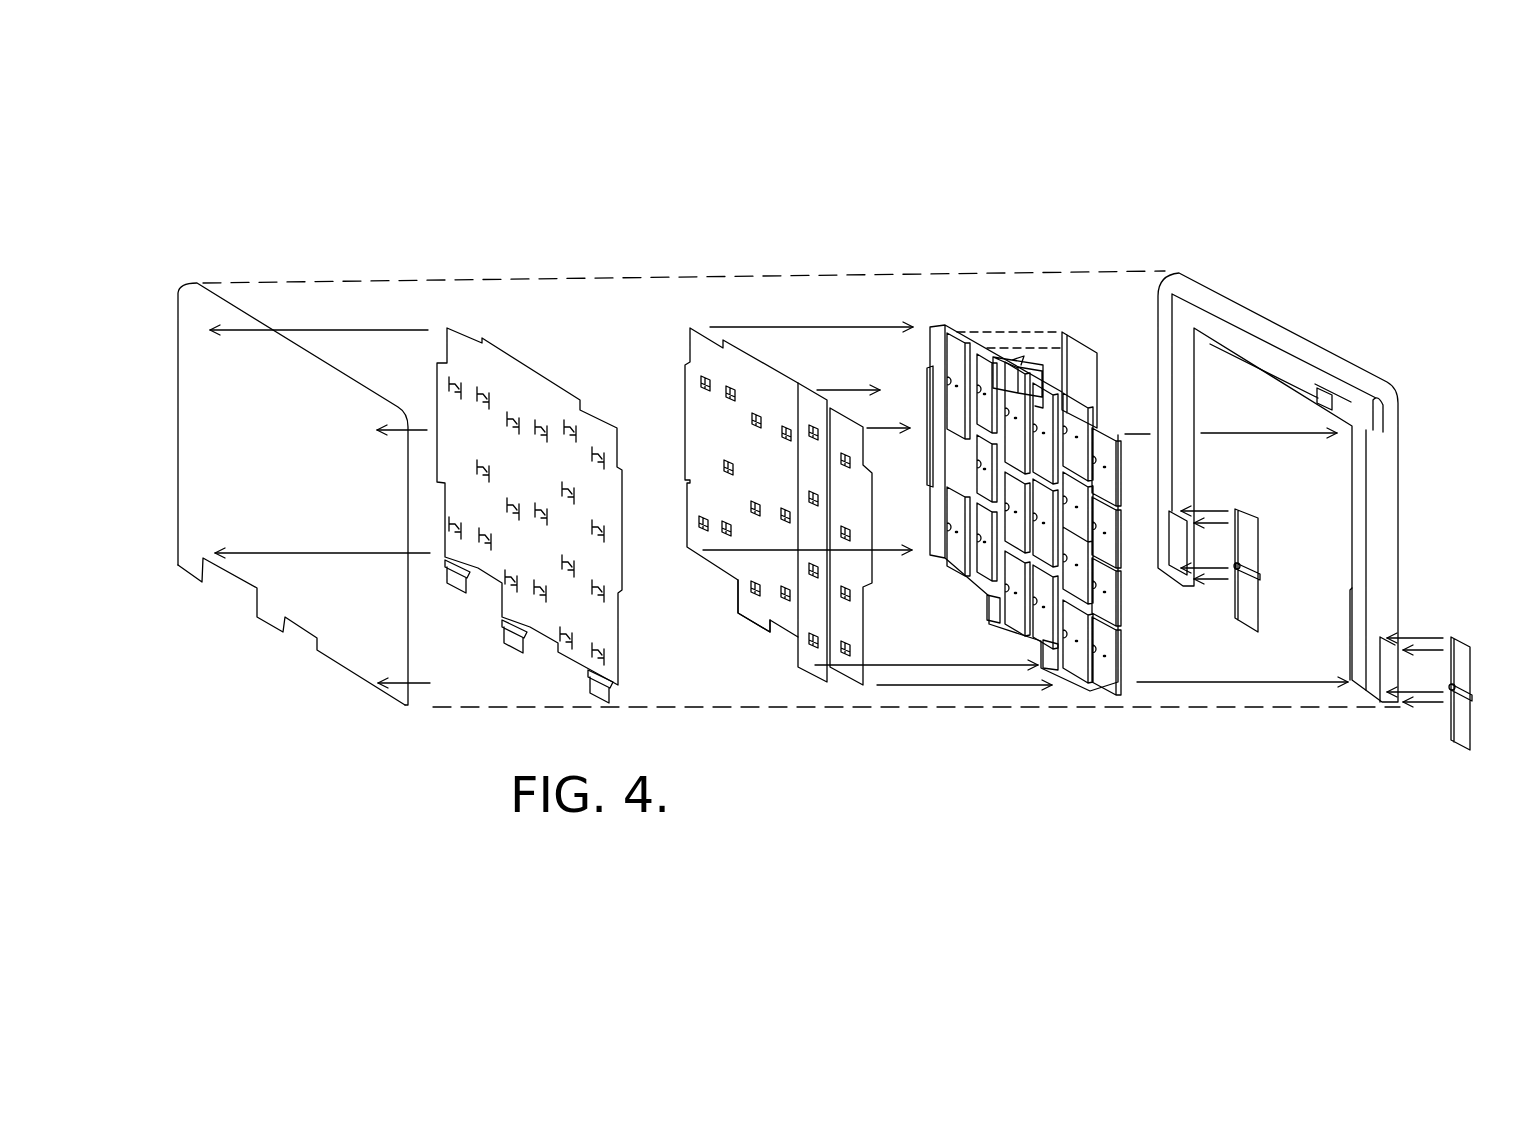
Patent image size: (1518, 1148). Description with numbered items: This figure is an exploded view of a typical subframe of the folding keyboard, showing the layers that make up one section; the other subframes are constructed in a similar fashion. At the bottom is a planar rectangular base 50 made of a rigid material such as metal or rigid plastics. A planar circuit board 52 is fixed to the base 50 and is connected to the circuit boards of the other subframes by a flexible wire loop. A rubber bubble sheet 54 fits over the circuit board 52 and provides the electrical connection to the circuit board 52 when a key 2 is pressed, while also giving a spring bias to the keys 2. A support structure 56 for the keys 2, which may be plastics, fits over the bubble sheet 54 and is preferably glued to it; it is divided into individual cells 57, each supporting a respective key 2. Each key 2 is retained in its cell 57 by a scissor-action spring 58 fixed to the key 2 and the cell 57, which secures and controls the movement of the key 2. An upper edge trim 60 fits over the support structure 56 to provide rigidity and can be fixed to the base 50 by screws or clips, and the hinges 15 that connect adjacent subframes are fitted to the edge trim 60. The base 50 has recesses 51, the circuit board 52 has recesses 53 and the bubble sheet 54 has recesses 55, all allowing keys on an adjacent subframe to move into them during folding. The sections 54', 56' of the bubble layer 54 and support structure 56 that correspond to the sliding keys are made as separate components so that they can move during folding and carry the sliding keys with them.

The base 50 is at (212, 403).
The recesses 51 is at (230, 578).
The circuit board 52 is at (605, 628).
The recesses 53 is at (545, 636).
The rubber bubble sheet 54 is at (741, 465).
The sliding portion of bubble layer 54' is at (814, 574).
The recesses 55 is at (736, 588).
The support structure 56 is at (1002, 491).
The sliding portion of support structure 56' is at (1031, 681).
The cells 57 is at (1100, 650).
The scissor-action spring 58 is at (1030, 362).
The key 2 is at (1083, 375).
The upper edge trim 60 is at (1380, 538).
The hinges 15 is at (1244, 532).